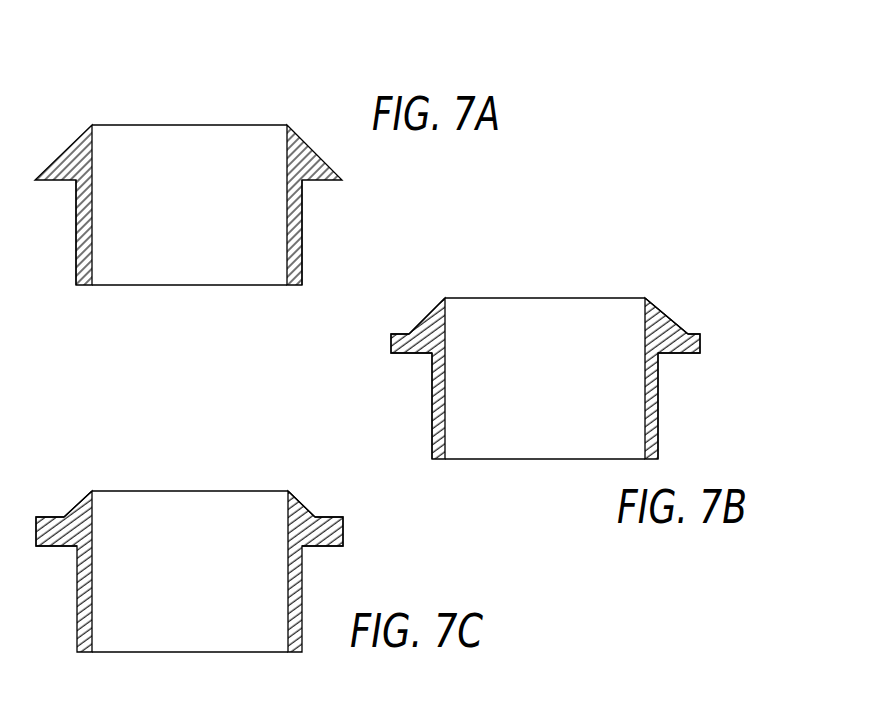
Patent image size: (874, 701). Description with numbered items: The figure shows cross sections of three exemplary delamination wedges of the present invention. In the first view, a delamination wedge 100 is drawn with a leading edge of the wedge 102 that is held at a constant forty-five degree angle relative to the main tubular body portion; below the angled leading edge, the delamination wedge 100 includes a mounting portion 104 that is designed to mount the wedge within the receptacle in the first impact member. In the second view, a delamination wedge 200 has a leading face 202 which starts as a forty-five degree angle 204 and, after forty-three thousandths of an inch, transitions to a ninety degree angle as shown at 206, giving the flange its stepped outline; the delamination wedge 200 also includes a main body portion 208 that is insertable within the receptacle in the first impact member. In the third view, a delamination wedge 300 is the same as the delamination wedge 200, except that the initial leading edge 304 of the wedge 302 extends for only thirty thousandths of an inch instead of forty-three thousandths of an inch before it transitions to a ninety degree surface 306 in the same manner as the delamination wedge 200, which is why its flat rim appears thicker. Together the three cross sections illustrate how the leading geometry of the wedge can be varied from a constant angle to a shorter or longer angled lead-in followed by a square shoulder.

In FIG. 7A, the delamination wedge 100 is at (207, 159).
In FIG. 7A, the leading edge of the wedge 102 is at (312, 152).
In FIG. 7A, the mounting portion 104 is at (292, 217).
In FIG. 7B, the delamination wedge 200 is at (579, 331).
In FIG. 7B, the leading face 202 is at (579, 342).
In FIG. 7B, the 45° angle 204 is at (657, 315).
In FIG. 7B, the 90° angle 206 is at (692, 335).
In FIG. 7B, the main body portion 208 is at (660, 402).
In FIG. 7C, the delamination wedge 300 is at (219, 523).
In FIG. 7C, the wedge 302 is at (224, 535).
In FIG. 7C, the initial leading edge 304 is at (300, 503).
In FIG. 7C, the 90° surface 306 is at (335, 527).